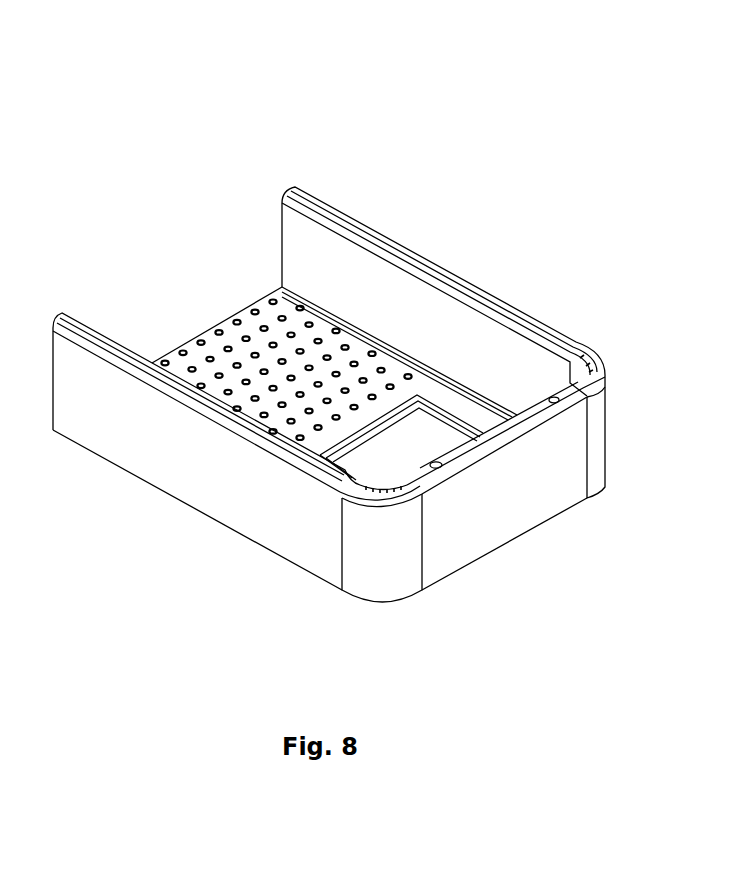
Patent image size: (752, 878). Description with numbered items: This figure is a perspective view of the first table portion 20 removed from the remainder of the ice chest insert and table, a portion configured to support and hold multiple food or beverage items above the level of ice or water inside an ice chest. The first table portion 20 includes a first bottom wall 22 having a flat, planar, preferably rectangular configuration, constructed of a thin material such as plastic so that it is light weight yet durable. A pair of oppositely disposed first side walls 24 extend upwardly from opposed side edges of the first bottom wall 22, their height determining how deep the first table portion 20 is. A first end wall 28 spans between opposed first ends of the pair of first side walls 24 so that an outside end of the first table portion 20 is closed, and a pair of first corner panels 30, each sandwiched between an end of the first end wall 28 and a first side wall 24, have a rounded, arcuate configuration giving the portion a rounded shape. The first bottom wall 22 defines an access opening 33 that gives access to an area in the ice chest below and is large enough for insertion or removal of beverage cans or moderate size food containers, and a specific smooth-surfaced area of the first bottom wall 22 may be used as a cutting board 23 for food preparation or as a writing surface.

The first table portion 20 is at (372, 84).
The first bottom wall 22 is at (383, 366).
The cutting board 23 is at (250, 383).
The first side walls 24 is at (85, 417).
The first end wall 28 is at (517, 513).
The first corner panels 30 is at (378, 577).
The access opening 33 is at (426, 430).